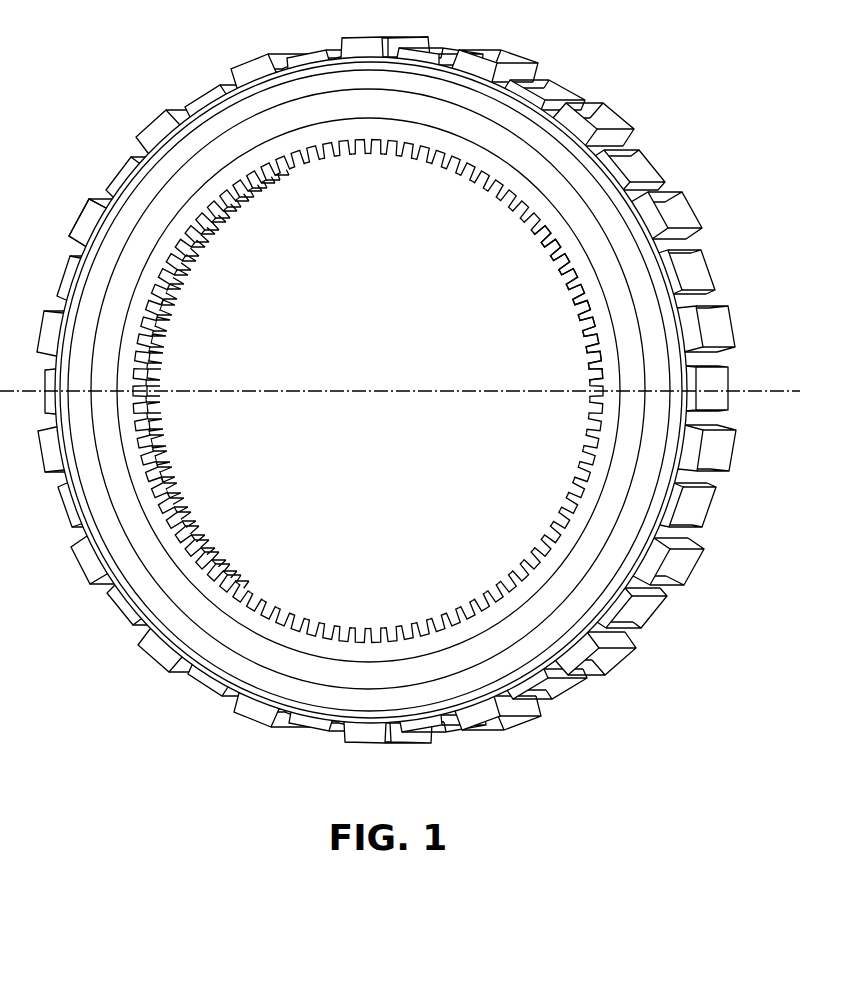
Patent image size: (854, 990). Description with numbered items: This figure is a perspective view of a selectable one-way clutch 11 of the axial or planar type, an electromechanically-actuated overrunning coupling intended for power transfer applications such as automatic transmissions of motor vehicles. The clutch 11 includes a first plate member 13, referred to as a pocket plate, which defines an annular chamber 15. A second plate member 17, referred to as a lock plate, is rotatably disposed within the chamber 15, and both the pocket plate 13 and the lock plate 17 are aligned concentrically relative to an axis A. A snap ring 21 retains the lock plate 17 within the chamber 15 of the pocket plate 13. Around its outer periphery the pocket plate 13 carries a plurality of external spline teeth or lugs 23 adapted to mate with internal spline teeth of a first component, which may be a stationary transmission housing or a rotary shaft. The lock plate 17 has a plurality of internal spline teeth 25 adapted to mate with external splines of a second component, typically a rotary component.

The selectable one-way clutch 11 is at (400, 375).
The first plate member 13 is at (673, 208).
The annular chamber 15 is at (230, 112).
The second plate member 17 is at (445, 140).
The snap ring 21 is at (182, 150).
The external spline teeth or lugs 23 is at (83, 220).
The internal spline teeth 25 is at (576, 293).
The axis A is at (352, 400).